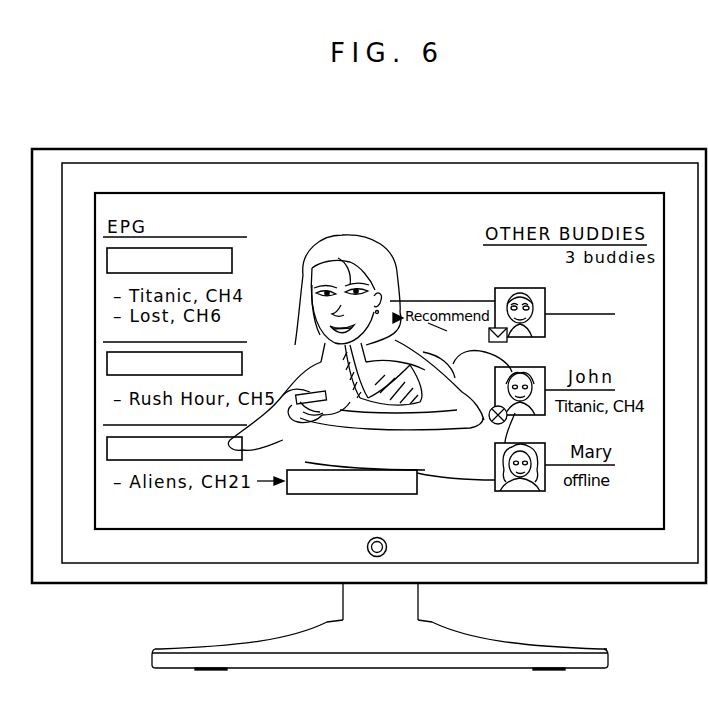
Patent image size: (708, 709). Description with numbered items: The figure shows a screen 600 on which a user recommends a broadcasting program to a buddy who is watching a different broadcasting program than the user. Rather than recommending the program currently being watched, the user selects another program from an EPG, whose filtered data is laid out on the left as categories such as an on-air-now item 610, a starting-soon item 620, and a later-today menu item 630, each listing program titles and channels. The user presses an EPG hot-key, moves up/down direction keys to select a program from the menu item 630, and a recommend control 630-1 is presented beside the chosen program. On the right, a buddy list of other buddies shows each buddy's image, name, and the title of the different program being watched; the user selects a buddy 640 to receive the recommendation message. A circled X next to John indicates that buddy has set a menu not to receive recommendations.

The display apparatus (TV) 600 is at (396, 193).
The On Air Now EPG item 610 is at (232, 264).
The Starting Soon EPG item 620 is at (242, 363).
The menu item 630 is at (242, 452).
The Recommend button 630-1 is at (331, 469).
The buddy 640 is at (495, 289).